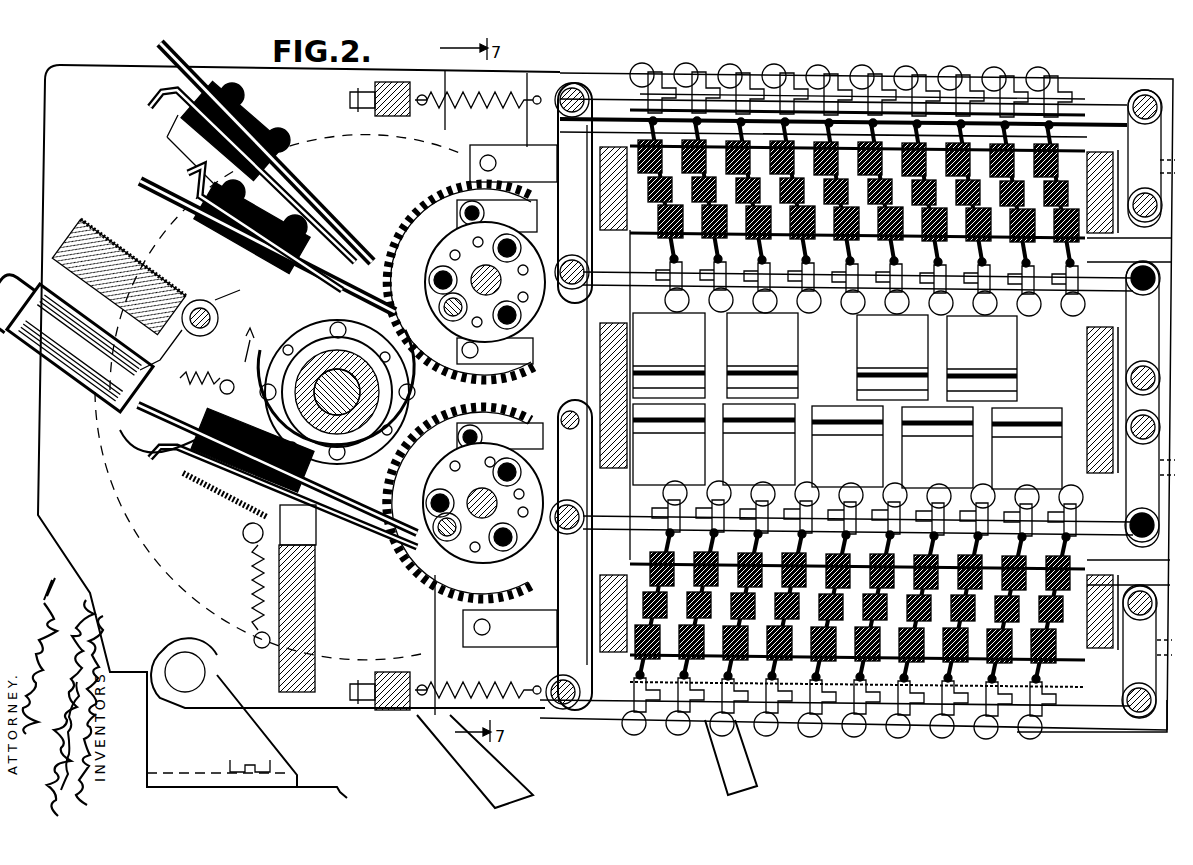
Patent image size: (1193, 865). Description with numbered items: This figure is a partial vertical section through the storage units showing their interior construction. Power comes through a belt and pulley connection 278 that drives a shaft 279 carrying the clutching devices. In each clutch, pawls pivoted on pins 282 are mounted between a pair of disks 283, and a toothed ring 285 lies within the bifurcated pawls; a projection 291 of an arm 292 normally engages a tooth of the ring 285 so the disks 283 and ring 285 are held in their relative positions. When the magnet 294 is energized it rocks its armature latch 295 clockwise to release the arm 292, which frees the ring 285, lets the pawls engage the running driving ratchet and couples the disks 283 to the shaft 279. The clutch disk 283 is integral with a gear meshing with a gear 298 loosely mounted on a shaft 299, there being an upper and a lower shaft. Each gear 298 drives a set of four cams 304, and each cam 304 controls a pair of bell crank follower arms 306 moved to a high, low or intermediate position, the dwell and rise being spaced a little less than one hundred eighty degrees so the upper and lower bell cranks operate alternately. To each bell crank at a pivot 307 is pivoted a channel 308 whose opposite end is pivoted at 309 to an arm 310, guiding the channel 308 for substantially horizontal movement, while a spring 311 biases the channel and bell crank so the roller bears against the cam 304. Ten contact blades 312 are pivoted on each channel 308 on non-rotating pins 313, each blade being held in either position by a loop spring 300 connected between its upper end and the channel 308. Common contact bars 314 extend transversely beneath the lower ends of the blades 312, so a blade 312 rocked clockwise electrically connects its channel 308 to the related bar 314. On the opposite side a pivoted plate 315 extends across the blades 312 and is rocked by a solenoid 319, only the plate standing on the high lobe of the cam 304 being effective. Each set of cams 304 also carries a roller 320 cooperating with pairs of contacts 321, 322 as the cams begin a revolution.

The belt and pulley connection 278 is at (428, 738).
The shaft 279 is at (248, 356).
The pins 282 is at (243, 536).
The disks 283 is at (437, 400).
The ring 285 is at (440, 480).
The projection 291 is at (297, 598).
The arm 292 is at (140, 445).
The magnet 294 is at (107, 360).
The armature latch 295 is at (108, 430).
The gear 298 is at (421, 196).
The shaft 299 is at (501, 281).
The loop spring 300 is at (736, 82).
The cams 304 is at (398, 236).
The bell crank follower arms 306 is at (512, 200).
The pivot 307 is at (573, 84).
The channel 308 is at (1092, 110).
The pivot 309 is at (1147, 92).
The arm 310 is at (1149, 404).
The spring 311 is at (470, 106).
The contact blades 312 is at (660, 88).
The pins 313 is at (922, 82).
The common contact bars 314 is at (650, 140).
The plate 315 is at (1075, 145).
The solenoid 319 is at (1018, 450).
The roller 320 is at (443, 280).
The contacts 321 is at (372, 572).
The contacts 322 is at (337, 370).